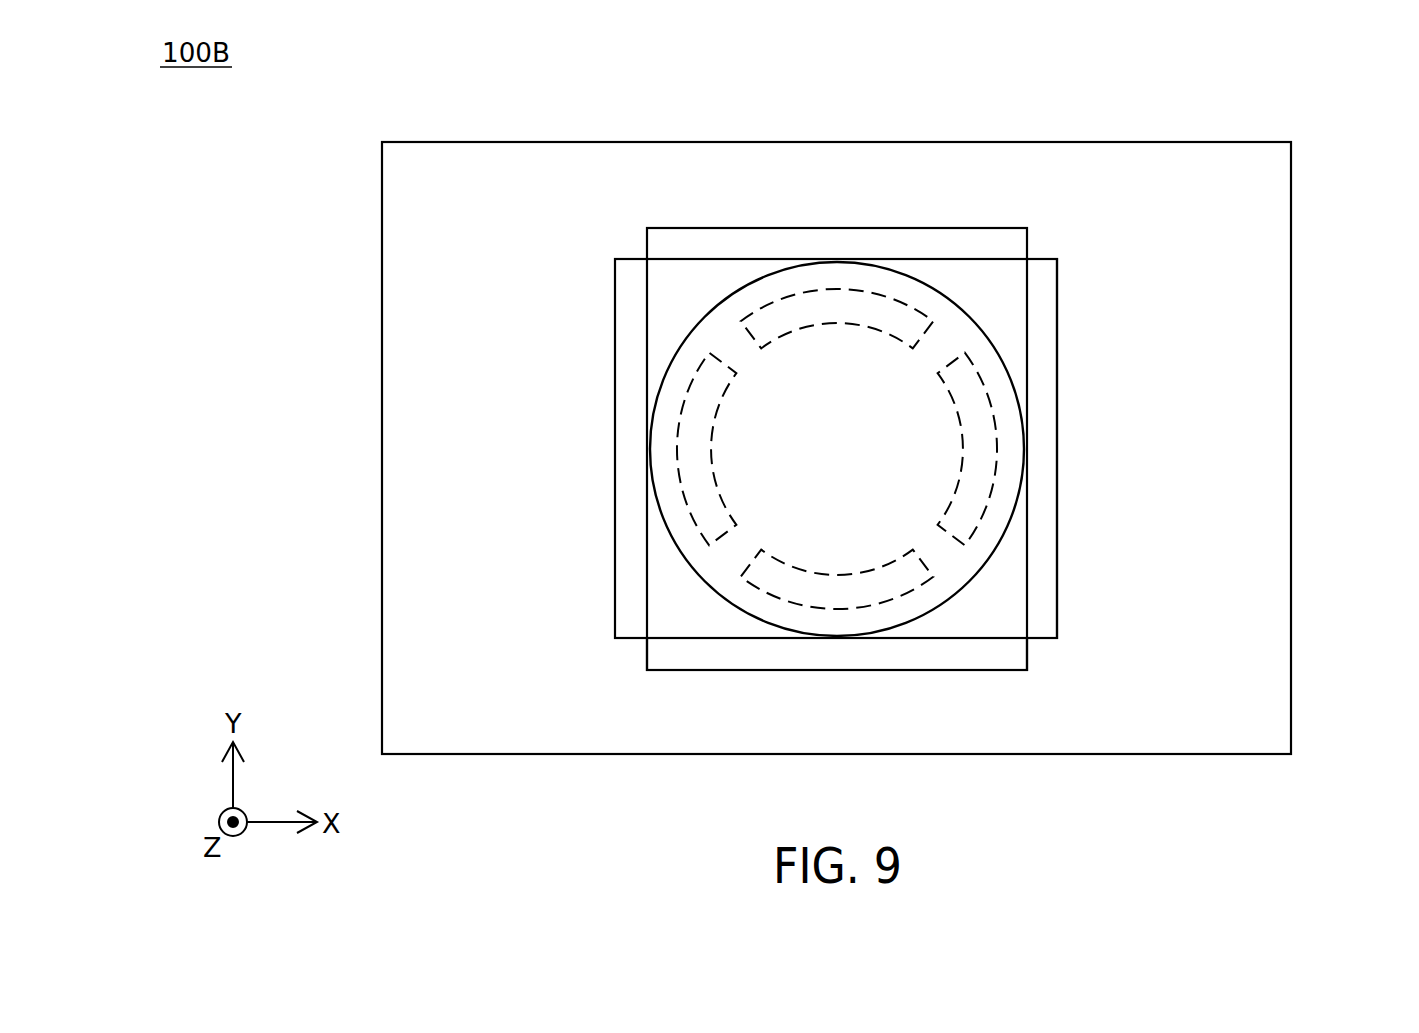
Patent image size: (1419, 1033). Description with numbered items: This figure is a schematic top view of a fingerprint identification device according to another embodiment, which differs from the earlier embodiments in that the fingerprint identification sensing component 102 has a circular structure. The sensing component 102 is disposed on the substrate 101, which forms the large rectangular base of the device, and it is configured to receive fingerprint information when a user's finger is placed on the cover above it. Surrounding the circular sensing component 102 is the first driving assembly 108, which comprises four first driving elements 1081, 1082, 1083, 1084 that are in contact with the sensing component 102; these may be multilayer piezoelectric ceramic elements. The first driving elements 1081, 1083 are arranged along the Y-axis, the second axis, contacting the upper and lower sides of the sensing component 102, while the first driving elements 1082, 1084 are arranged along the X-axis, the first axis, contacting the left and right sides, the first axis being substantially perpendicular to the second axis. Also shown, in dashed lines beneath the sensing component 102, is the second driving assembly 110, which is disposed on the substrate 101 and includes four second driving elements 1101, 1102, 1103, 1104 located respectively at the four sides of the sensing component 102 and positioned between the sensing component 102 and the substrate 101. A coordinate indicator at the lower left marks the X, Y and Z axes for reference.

The substrate 101 is at (470, 578).
The fingerprint identification sensing component 102 is at (953, 322).
The first driving assembly 108 is at (775, 450).
The first driving element 1081 is at (967, 653).
The first driving element 1082 is at (632, 513).
The first driving element 1083 is at (706, 243).
The first driving element 1084 is at (1040, 533).
The second driving assembly 110 is at (775, 450).
The second driving element 1101 is at (802, 590).
The second driving element 1102 is at (693, 453).
The second driving element 1103 is at (842, 305).
The second driving element 1104 is at (980, 423).